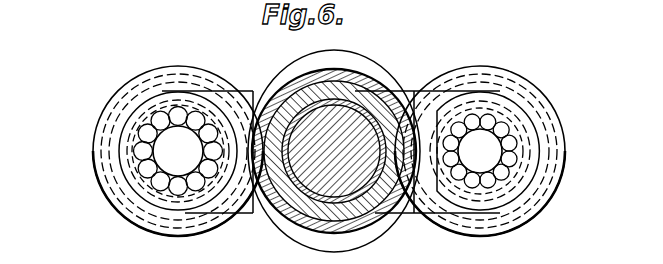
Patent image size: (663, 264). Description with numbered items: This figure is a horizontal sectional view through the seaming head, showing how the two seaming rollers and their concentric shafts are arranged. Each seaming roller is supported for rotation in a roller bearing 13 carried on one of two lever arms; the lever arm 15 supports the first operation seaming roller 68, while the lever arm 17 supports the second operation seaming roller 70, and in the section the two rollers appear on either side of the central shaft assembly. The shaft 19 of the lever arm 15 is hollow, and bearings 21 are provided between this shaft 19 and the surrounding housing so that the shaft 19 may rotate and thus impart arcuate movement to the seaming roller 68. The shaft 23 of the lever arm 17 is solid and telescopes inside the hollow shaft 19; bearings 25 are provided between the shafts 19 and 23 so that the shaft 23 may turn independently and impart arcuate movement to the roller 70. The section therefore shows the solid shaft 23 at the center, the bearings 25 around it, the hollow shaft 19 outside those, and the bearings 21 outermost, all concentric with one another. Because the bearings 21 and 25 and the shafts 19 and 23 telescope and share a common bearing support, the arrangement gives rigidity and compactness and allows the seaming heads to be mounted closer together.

The roller bearing 13 is at (179, 108).
The lever arm 15 is at (224, 215).
The lever arm 17 is at (414, 214).
The shaft 19 is at (370, 222).
The bearings 21 is at (255, 217).
The shaft 23 is at (367, 96).
The bearings 25 is at (403, 92).
The first operation seaming roller 68 is at (96, 127).
The second operation seaming roller 70 is at (562, 120).